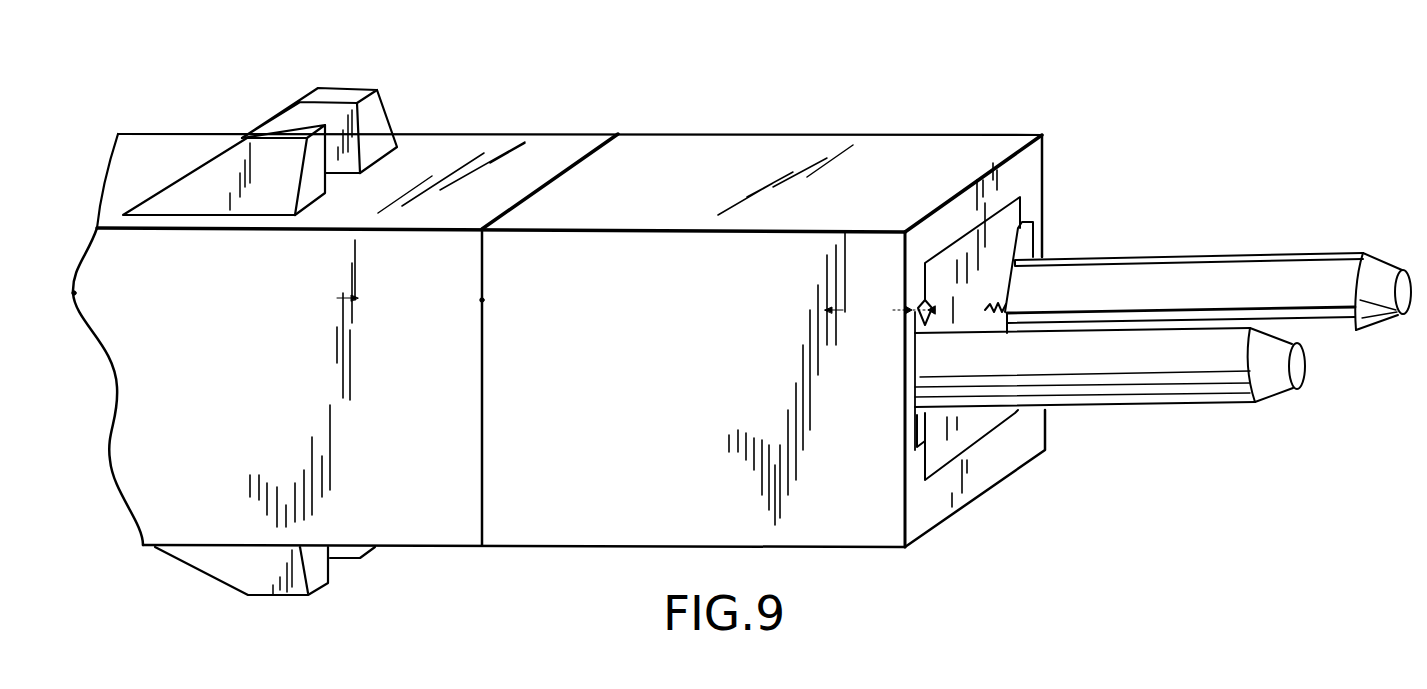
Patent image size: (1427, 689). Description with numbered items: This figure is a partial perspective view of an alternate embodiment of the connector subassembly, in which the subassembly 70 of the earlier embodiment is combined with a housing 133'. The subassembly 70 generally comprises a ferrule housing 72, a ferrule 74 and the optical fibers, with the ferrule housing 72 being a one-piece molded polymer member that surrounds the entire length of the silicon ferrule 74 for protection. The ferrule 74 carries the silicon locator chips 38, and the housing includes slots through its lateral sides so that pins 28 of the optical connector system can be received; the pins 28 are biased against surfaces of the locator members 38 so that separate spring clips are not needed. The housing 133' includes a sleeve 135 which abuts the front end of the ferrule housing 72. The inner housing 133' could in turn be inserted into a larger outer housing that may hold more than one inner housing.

The pins 28 is at (1348, 330).
The silicon locator chips 38 is at (972, 256).
The subassembly 70 is at (443, 160).
The ferrule housing 72 is at (425, 522).
The ferrule 74 is at (1002, 223).
The housing 133' is at (558, 285).
The sleeve 135 is at (747, 158).